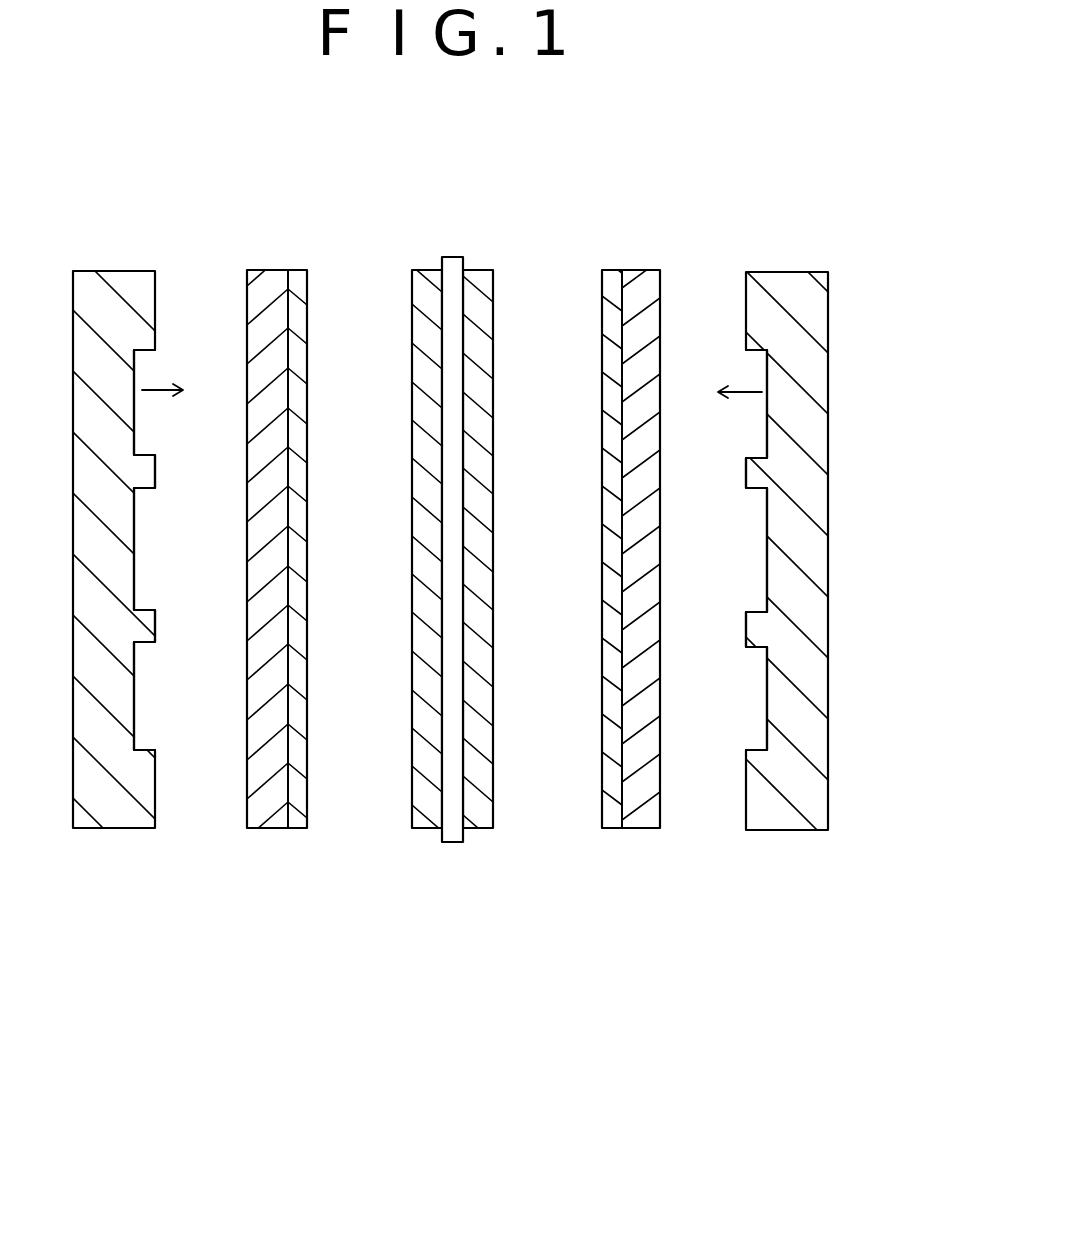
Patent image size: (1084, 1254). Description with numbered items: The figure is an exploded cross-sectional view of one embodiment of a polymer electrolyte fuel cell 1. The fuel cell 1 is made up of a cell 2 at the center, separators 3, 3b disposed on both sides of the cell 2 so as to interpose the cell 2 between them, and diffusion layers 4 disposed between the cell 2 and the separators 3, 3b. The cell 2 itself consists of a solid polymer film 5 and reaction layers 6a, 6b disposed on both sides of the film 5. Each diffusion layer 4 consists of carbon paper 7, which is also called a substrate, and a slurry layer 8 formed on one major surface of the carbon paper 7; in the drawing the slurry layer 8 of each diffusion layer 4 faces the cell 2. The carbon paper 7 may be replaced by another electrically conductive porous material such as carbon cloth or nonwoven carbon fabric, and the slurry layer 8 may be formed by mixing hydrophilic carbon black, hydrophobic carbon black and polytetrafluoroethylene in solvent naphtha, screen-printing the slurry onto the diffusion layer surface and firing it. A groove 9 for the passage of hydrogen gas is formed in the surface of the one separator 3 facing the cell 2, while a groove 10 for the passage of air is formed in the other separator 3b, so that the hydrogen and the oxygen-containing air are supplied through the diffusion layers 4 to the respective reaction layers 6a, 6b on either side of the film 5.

The fuel cell 1 is at (735, 1023).
The cell 2 is at (470, 536).
The separator 3 is at (112, 292).
The separator 3b is at (787, 292).
The diffusion layer 4 is at (459, 541).
The solid polymer film 5 is at (452, 763).
The reaction layer 6a is at (430, 810).
The reaction layer 6b is at (480, 817).
The carbon paper 7 is at (263, 813).
The slurry layer 8 is at (298, 820).
The groove 9 is at (145, 557).
The groove 10 is at (758, 558).